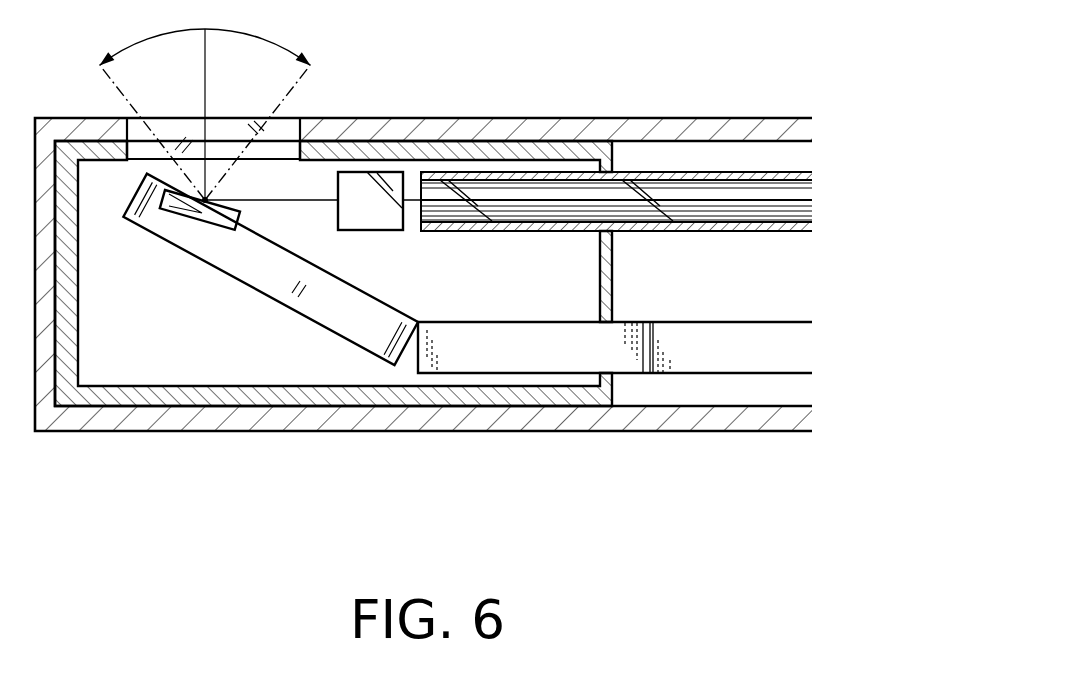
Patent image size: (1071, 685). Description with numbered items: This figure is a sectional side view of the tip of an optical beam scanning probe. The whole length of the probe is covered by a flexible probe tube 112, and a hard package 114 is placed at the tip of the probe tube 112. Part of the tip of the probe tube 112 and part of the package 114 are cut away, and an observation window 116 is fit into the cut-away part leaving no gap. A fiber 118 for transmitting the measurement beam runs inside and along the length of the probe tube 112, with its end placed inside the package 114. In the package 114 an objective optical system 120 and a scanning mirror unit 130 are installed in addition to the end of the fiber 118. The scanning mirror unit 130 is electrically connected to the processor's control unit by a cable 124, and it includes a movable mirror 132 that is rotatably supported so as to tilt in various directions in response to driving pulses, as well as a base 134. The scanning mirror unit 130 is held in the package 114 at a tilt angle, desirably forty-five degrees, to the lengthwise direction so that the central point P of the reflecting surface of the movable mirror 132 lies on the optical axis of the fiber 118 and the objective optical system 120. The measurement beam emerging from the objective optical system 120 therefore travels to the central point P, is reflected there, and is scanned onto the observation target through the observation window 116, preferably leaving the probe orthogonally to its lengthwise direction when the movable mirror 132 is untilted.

The probe tube 112 is at (747, 132).
The package 114 is at (538, 150).
The observation window 116 is at (292, 117).
The fiber 118 is at (725, 236).
The objective optical system 120 is at (363, 223).
The cable 124 is at (692, 374).
The scanning mirror unit 130 is at (270, 278).
The movable mirror 132 is at (212, 218).
The base 134 is at (265, 275).
The central point P is at (188, 208).